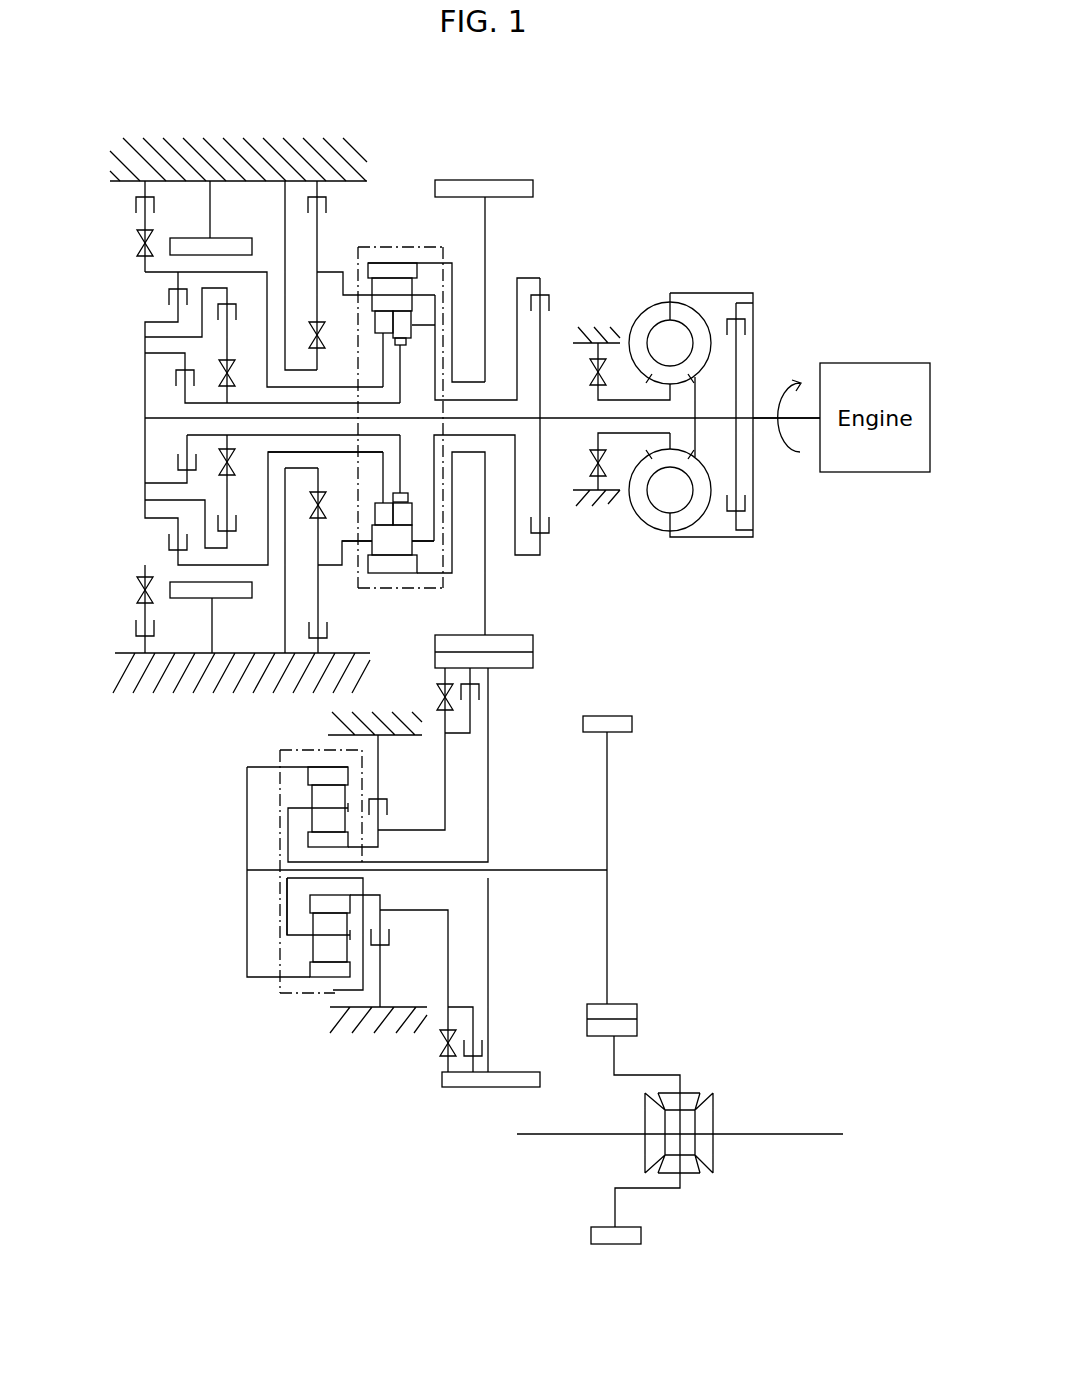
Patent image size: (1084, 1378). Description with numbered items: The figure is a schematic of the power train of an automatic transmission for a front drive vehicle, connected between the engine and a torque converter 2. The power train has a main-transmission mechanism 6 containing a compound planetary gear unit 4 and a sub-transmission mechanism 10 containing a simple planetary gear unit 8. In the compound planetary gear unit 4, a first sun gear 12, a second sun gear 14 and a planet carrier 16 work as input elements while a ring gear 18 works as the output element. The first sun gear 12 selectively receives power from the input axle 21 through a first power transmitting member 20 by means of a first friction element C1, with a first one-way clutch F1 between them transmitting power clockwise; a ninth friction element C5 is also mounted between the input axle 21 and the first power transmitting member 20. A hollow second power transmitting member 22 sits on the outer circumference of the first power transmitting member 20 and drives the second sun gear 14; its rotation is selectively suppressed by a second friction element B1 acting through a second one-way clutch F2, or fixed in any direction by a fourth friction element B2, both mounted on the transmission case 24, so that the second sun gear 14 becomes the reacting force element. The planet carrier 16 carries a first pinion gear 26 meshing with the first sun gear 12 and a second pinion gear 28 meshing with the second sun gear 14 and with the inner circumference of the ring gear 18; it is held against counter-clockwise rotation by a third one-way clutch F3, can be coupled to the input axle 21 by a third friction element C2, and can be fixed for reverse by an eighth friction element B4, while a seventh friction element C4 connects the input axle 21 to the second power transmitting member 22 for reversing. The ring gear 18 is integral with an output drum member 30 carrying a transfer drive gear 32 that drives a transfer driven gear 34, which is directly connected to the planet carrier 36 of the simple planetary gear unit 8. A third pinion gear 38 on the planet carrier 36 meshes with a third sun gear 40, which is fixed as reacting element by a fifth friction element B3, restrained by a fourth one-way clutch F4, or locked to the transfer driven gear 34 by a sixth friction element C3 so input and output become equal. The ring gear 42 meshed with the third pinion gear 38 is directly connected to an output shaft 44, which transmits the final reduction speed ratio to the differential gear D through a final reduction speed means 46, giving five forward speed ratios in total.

The torque converter 2 is at (774, 310).
The compound planetary gear unit 4 is at (418, 245).
The main-transmission mechanism 6 is at (266, 120).
The simple planetary gear unit 8 is at (305, 995).
The sub-transmission mechanism 10 is at (385, 1049).
The first sun gear 12 is at (410, 498).
The second sun gear 14 is at (375, 517).
The planet carrier 16 is at (455, 527).
The ring gear 18 is at (407, 565).
The first power transmitting member 20 is at (210, 441).
The input axle 21 is at (160, 419).
The second power transmitting member 22 is at (283, 455).
The transmission case 24 is at (190, 150).
The first pinion gear 26 is at (405, 519).
The second pinion gear 28 is at (384, 548).
The output drum member 30 is at (452, 303).
The transfer drive gear 32 is at (488, 178).
The transfer driven gear 34 is at (535, 660).
The planet carrier 36 is at (290, 910).
The third pinion gear 38 is at (320, 950).
The third sun gear 40 is at (320, 902).
The ring gear 42 is at (310, 968).
The output shaft 44 is at (575, 868).
The final reduction speed means 46 is at (662, 1025).
The second friction element B1 is at (133, 207).
The fourth friction element B2 is at (233, 238).
The fifth friction element B3 is at (403, 983).
The eighth friction element B4 is at (327, 207).
The first friction element C1 is at (205, 345).
The third friction element C2 is at (508, 416).
The sixth friction element C3 is at (480, 692).
The seventh friction element C4 is at (167, 297).
The ninth friction element C5 is at (272, 378).
The first one-way clutch F1 is at (239, 373).
The second one-way clutch F2 is at (134, 243).
The third one-way clutch F3 is at (331, 335).
The fourth one-way clutch F4 is at (415, 749).
The differential gear D is at (736, 1091).